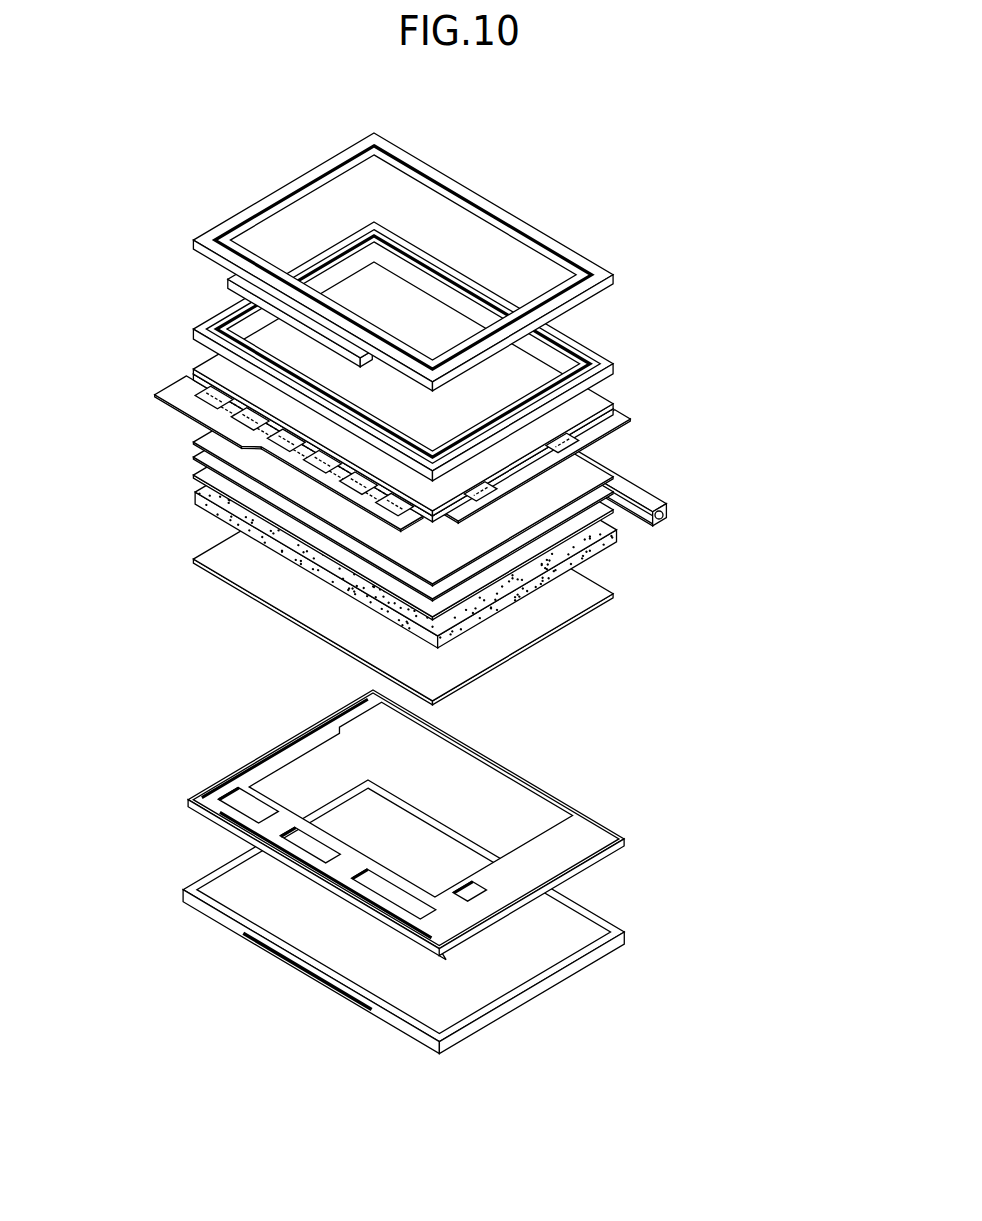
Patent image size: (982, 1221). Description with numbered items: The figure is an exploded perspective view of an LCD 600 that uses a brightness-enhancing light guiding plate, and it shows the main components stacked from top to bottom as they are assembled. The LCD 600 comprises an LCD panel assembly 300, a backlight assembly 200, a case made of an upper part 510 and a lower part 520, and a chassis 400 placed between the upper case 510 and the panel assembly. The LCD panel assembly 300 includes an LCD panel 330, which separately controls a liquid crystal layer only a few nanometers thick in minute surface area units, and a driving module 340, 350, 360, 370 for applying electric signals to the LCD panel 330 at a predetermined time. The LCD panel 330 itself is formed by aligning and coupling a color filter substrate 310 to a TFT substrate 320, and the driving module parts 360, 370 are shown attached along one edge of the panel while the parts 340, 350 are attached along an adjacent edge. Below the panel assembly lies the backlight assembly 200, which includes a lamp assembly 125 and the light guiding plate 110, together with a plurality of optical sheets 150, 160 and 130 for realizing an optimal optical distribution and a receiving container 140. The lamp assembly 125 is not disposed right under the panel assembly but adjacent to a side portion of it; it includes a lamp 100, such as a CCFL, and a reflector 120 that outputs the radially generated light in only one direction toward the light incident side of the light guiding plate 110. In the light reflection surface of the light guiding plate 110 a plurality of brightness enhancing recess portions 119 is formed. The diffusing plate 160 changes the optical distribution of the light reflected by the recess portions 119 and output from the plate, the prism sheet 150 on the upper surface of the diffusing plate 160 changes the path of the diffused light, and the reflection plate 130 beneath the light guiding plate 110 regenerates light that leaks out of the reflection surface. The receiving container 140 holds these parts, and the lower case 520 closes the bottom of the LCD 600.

The LCD 600 is at (221, 166).
The case 510 is at (590, 248).
The chassis 400 is at (585, 332).
The LCD panel assembly 300 is at (196, 352).
The LCD panel 330 is at (492, 392).
The color filter substrate 310 is at (593, 402).
The TFT substrate 320 is at (603, 412).
The driving module 340 is at (597, 435).
The driving module 350 is at (598, 455).
The driving module 360 is at (192, 368).
The driving module 370 is at (167, 404).
The backlight assembly 200 is at (489, 647).
The prism sheet 150 is at (371, 468).
The diffusing plate 160 is at (193, 475).
The light guiding plate 110 is at (458, 532).
The brightness enhancing recess portions 119 is at (500, 610).
The lamp assembly 125 is at (651, 503).
The reflector 120 is at (641, 511).
The lamp 100 is at (655, 522).
The reflection plate 130 is at (495, 656).
The receiving container 140 is at (618, 797).
The case 520 is at (628, 927).